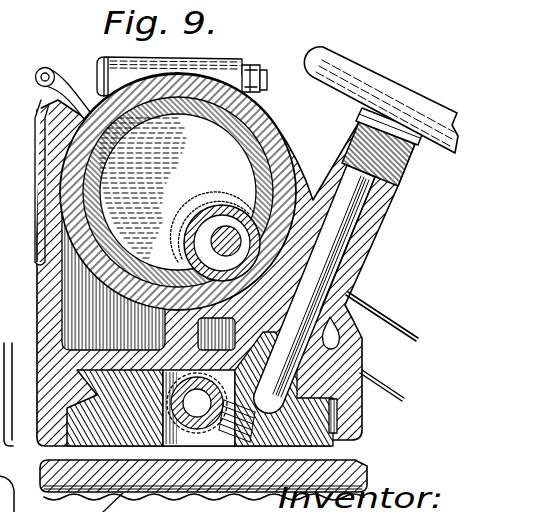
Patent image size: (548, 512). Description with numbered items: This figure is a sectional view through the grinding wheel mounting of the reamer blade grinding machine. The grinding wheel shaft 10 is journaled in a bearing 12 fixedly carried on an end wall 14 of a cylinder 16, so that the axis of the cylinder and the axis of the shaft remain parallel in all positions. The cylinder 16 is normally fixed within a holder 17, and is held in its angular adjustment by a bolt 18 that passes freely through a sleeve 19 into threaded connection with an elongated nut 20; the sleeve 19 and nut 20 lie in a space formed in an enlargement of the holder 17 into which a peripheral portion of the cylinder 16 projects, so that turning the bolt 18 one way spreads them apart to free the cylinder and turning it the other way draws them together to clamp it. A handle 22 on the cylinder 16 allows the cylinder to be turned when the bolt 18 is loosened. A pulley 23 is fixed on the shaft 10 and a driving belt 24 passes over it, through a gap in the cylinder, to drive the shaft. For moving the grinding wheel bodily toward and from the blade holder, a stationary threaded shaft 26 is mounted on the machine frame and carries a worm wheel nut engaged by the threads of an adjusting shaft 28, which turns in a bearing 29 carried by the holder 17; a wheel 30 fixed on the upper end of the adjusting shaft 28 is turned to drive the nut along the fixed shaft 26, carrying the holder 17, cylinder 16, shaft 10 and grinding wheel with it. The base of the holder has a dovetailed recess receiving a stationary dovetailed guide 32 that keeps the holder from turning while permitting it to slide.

The grinding wheel shaft 10 is at (208, 246).
The bearing 12 is at (185, 215).
The end wall 14 is at (14, 348).
The cylinder 16 is at (83, 161).
The holder 17 is at (360, 347).
The bolt 18 is at (262, 80).
The sleeve 19 is at (248, 78).
The elongated nut 20 is at (92, 75).
The handle 22 is at (49, 67).
The pulley 23 is at (200, 206).
The driving belt 24 is at (411, 328).
The stationary threaded shaft 26 is at (151, 511).
The adjusting shaft 28 is at (330, 238).
The bearing 29 is at (378, 214).
The wheel 30 is at (380, 88).
The dovetailed guide 32 is at (77, 449).